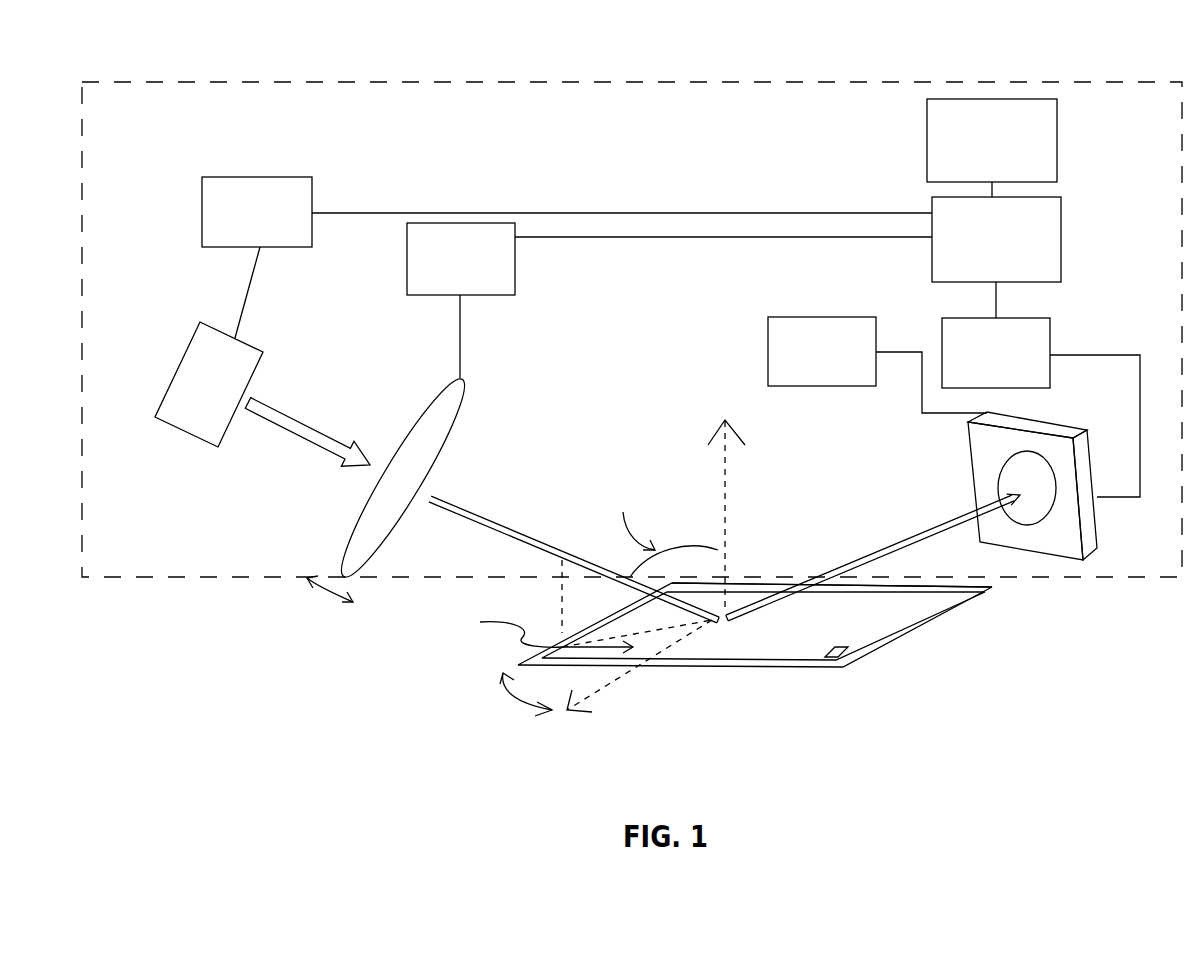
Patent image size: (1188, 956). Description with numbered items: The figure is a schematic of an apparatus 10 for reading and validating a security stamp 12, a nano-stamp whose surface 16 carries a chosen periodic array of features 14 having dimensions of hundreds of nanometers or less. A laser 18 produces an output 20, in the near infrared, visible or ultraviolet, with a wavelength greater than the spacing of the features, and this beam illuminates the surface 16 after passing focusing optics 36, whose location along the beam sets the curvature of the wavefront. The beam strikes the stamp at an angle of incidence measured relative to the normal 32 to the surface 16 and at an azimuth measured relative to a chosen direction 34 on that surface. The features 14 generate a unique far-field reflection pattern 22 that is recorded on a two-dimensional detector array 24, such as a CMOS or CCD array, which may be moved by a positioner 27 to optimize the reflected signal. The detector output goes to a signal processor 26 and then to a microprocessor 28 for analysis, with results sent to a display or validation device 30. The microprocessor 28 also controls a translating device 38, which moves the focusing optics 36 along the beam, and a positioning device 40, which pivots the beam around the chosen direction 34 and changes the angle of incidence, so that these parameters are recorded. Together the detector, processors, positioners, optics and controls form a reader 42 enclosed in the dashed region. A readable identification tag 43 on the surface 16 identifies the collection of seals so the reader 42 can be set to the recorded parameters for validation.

The apparatus 10 is at (247, 617).
The security stamp 12 is at (755, 636).
The periodic array of features 14 is at (838, 626).
The surface 16 is at (927, 583).
The laser 18 is at (245, 335).
The laser output 20 is at (298, 443).
The far-field pattern 22 is at (1023, 482).
The two-dimensional detector array 24 is at (983, 482).
The signal processor 26 is at (1016, 363).
The positioner 27 is at (842, 362).
The microprocessor 28 is at (1016, 249).
The display or validation device 30 is at (1012, 154).
The normal 32 is at (725, 498).
The chosen direction 34 is at (603, 687).
The focusing optics 36 is at (491, 478).
The translating device 38 is at (480, 269).
The positioning device 40 is at (277, 221).
The reader 42 is at (488, 83).
The readable identification tag 43 is at (832, 657).